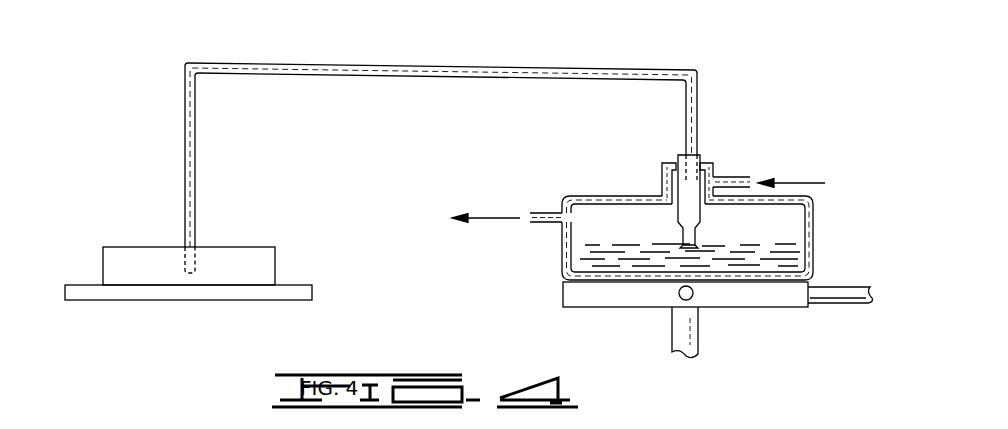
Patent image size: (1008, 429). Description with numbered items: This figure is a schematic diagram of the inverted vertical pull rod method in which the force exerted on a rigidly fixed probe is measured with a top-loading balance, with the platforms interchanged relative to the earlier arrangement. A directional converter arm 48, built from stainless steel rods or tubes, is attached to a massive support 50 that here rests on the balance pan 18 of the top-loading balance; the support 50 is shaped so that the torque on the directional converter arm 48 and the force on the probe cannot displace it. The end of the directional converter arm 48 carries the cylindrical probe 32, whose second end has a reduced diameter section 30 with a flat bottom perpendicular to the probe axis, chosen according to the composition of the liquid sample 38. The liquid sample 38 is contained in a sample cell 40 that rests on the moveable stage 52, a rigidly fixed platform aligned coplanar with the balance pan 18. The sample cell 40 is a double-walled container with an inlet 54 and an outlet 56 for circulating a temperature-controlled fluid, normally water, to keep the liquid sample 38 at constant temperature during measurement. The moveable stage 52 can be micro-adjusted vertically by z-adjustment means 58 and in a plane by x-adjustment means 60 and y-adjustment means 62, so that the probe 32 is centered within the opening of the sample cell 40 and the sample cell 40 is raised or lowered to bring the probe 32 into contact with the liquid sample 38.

The balance pan 18 is at (291, 285).
The reduced diameter section 30 is at (683, 233).
The cylindrical probe 32 is at (680, 198).
The liquid sample 38 is at (787, 252).
The sample cell 40 is at (812, 212).
The directional converter arm 48 is at (286, 63).
The support 50 is at (143, 247).
The moveable stage 52 is at (570, 290).
The inlet 54 is at (755, 177).
The outlet 56 is at (520, 213).
The z-adjustment means 58 is at (698, 340).
The x-adjustment means 60 is at (835, 305).
The y-adjustment means 62 is at (680, 297).